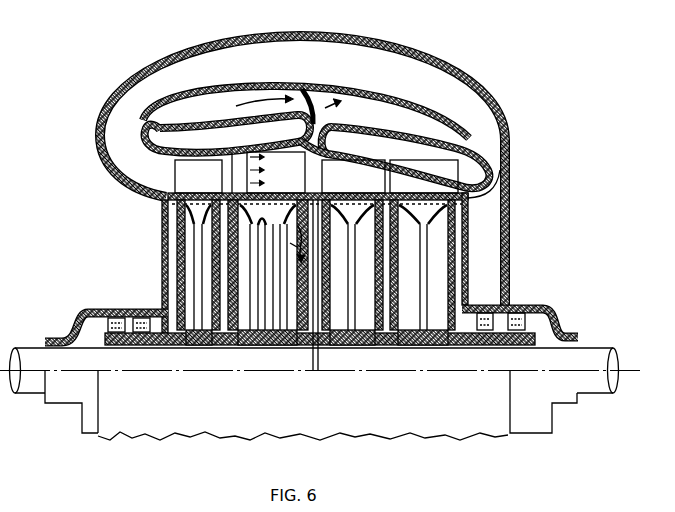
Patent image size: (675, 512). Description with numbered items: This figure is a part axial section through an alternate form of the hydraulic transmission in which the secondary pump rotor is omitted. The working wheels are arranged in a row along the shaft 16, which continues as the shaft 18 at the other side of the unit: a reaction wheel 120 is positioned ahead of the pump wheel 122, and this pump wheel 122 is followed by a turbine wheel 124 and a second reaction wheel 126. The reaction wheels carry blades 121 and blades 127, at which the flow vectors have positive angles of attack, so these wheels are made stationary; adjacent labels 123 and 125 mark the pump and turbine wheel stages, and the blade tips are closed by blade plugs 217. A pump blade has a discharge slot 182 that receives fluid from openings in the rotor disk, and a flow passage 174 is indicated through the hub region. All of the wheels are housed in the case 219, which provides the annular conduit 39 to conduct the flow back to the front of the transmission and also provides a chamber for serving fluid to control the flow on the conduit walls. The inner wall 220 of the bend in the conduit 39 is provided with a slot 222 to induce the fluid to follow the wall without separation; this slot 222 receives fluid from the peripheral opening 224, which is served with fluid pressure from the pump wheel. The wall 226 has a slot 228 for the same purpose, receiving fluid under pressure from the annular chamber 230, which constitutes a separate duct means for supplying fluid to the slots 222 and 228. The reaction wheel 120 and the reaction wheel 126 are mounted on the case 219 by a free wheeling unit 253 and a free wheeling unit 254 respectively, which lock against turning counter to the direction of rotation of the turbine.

The shaft 16 is at (40, 386).
The shaft 18 is at (588, 360).
The annular conduit 39 is at (382, 83).
The reaction wheel 120 is at (190, 224).
The blades 121 is at (208, 189).
The pump wheel 122 is at (282, 210).
The second chamber 123 is at (295, 189).
The turbine wheel 124 is at (368, 303).
The third chamber 125 is at (372, 189).
The reaction wheel 126 is at (444, 290).
The blades 127 is at (435, 189).
The passage 174 is at (302, 262).
The discharge slot 182 is at (255, 157).
The blade plugs 217 is at (322, 158).
The case 219 is at (510, 131).
The inner wall 220 is at (486, 160).
The slot 222 is at (468, 136).
The peripheral opening 224 is at (306, 112).
The wall 226 is at (146, 119).
The slot 228 is at (143, 138).
The annular chamber 230 is at (403, 126).
The free wheeling unit 253 is at (143, 320).
The free wheeling unit 254 is at (516, 316).